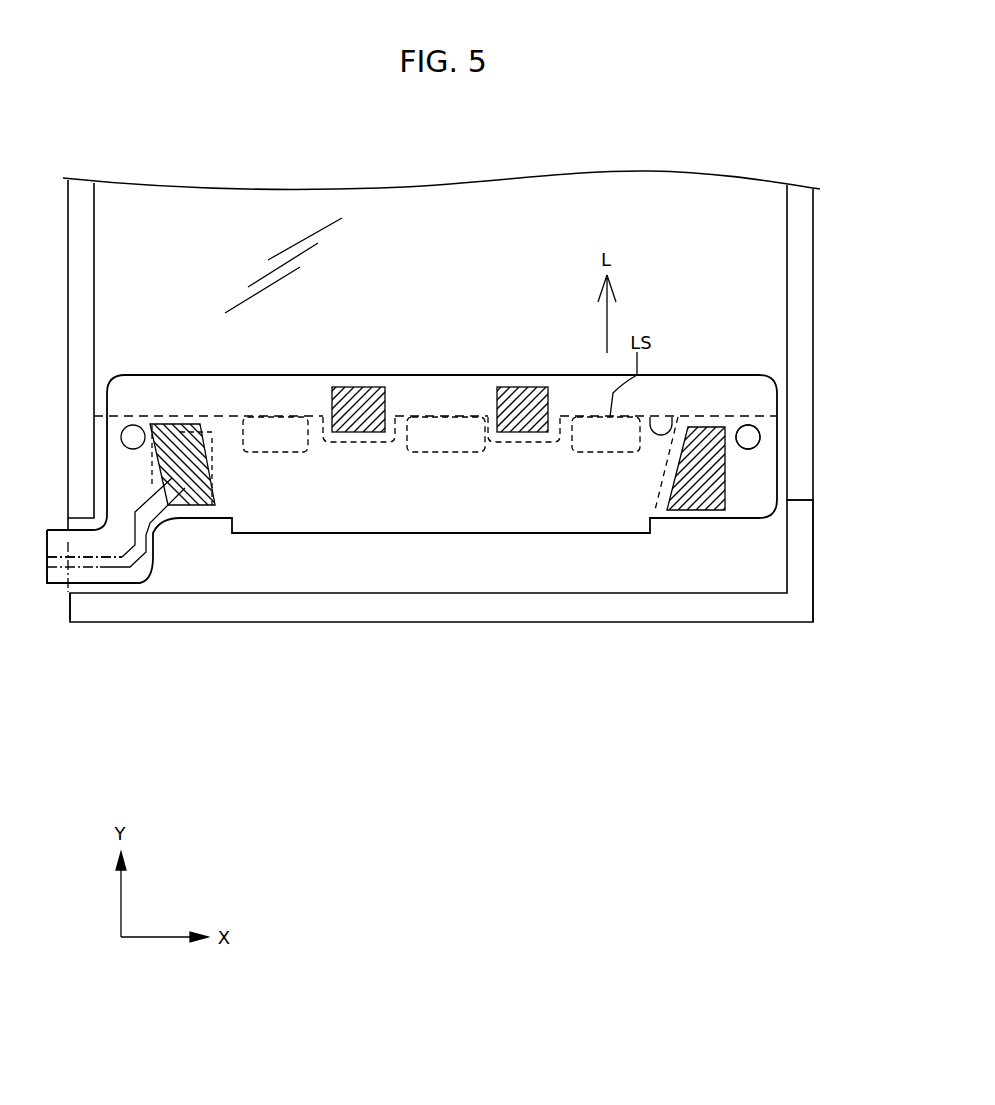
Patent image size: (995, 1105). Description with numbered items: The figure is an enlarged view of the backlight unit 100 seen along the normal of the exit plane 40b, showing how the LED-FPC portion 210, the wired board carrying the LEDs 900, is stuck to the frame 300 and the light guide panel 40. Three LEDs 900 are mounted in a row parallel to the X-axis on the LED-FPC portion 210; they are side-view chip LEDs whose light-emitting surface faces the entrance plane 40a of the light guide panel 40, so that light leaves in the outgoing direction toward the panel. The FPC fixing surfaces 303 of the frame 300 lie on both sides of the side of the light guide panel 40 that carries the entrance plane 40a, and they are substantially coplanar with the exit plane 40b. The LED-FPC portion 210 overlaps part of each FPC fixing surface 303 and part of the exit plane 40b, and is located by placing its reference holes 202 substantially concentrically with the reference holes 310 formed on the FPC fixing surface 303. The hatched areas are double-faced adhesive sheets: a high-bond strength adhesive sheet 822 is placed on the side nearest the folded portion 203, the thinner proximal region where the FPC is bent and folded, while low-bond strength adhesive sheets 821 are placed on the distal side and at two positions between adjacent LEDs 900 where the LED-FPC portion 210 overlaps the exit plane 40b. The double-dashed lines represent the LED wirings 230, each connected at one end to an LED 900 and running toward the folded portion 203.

The light guide panel 40 is at (778, 265).
The entrance plane 40a is at (672, 417).
The exit plane 40b is at (768, 305).
The backlight unit 100 is at (282, 733).
The reference hole 202 is at (752, 431).
The folded portion 203 is at (47, 572).
The LED-FPC portion 210 is at (195, 373).
The LED wiring 230 is at (104, 568).
The frame 300 is at (203, 620).
The FPC fixing surface 303 is at (805, 488).
The reference hole 310 is at (748, 437).
The low-bond strength adhesive sheet 821 is at (362, 432).
The high-bond strength adhesive sheet 822 is at (200, 507).
The LED 900 is at (275, 437).